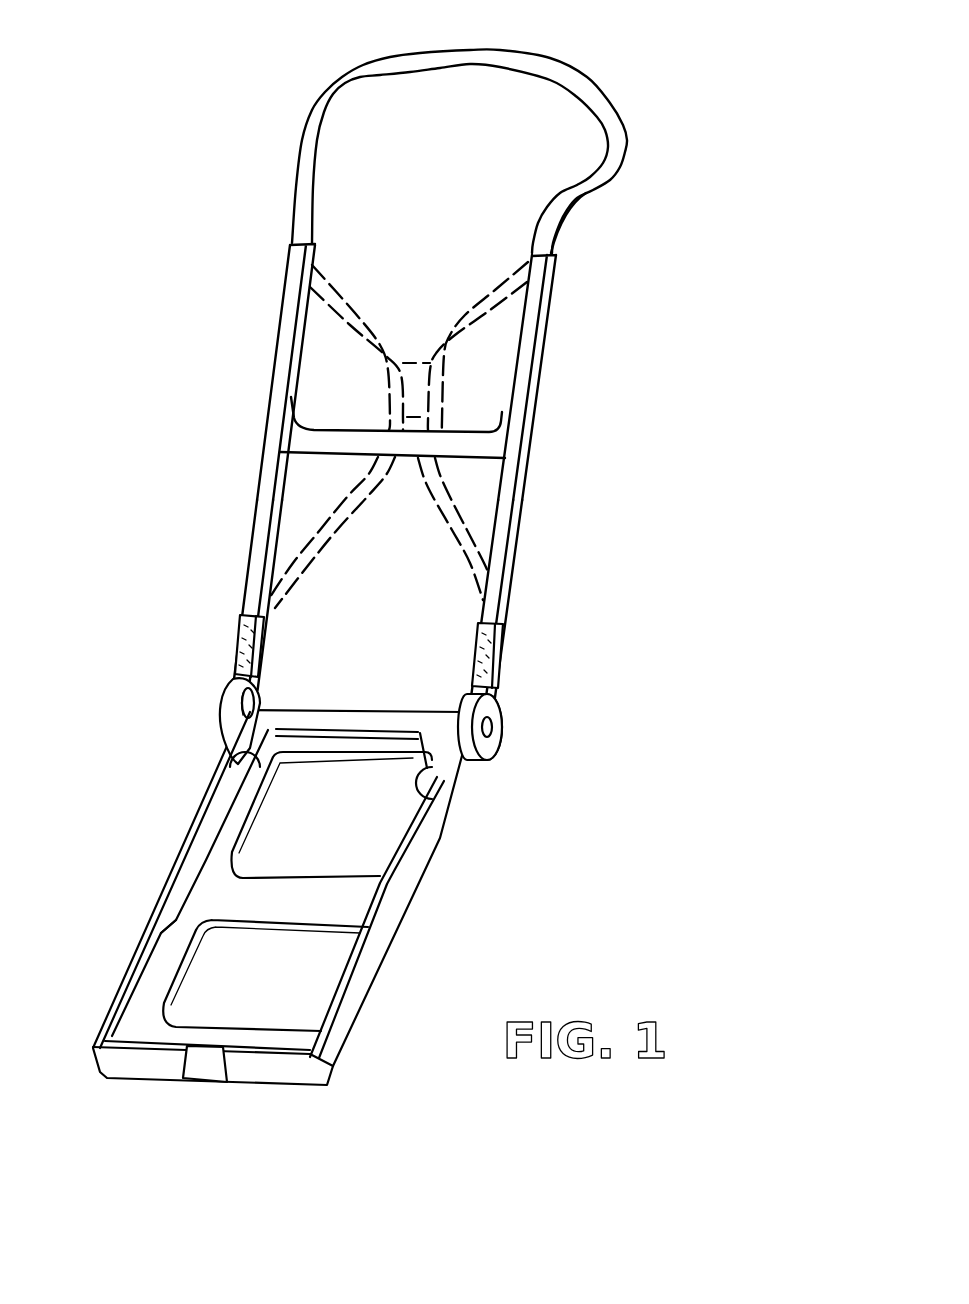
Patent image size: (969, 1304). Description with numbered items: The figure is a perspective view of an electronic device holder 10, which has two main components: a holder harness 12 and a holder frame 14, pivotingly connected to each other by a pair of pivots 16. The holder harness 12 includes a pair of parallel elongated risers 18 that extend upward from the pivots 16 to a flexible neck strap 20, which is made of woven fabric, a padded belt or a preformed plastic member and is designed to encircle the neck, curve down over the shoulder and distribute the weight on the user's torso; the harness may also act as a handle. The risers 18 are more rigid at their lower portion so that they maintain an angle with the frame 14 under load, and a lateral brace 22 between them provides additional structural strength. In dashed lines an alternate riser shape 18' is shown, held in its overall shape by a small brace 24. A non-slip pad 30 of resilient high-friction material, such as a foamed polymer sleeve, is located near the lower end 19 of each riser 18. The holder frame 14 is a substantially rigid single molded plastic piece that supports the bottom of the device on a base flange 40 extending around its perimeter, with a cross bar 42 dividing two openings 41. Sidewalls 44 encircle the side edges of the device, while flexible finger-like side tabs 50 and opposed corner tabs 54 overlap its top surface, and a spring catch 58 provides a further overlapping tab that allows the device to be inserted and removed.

The electronic device holder 10 is at (597, 58).
The holder harness 12 is at (282, 240).
The holder frame 14 is at (412, 937).
The pivots 16 is at (503, 729).
The risers 18 is at (395, 372).
The alternate riser shape 18' is at (451, 435).
The lower end 19 is at (257, 571).
The neck strap 20 is at (375, 75).
The lateral brace 22 is at (465, 445).
The small brace 24 is at (411, 358).
The non-slip pad 30 is at (242, 635).
The base flange 40 is at (242, 817).
The openings 41 is at (300, 1002).
The cross bar 42 is at (321, 897).
The sidewall 44 is at (150, 977).
The side tabs 50 is at (170, 900).
The corner tabs 54 is at (255, 798).
The spring catch 58 is at (207, 1072).